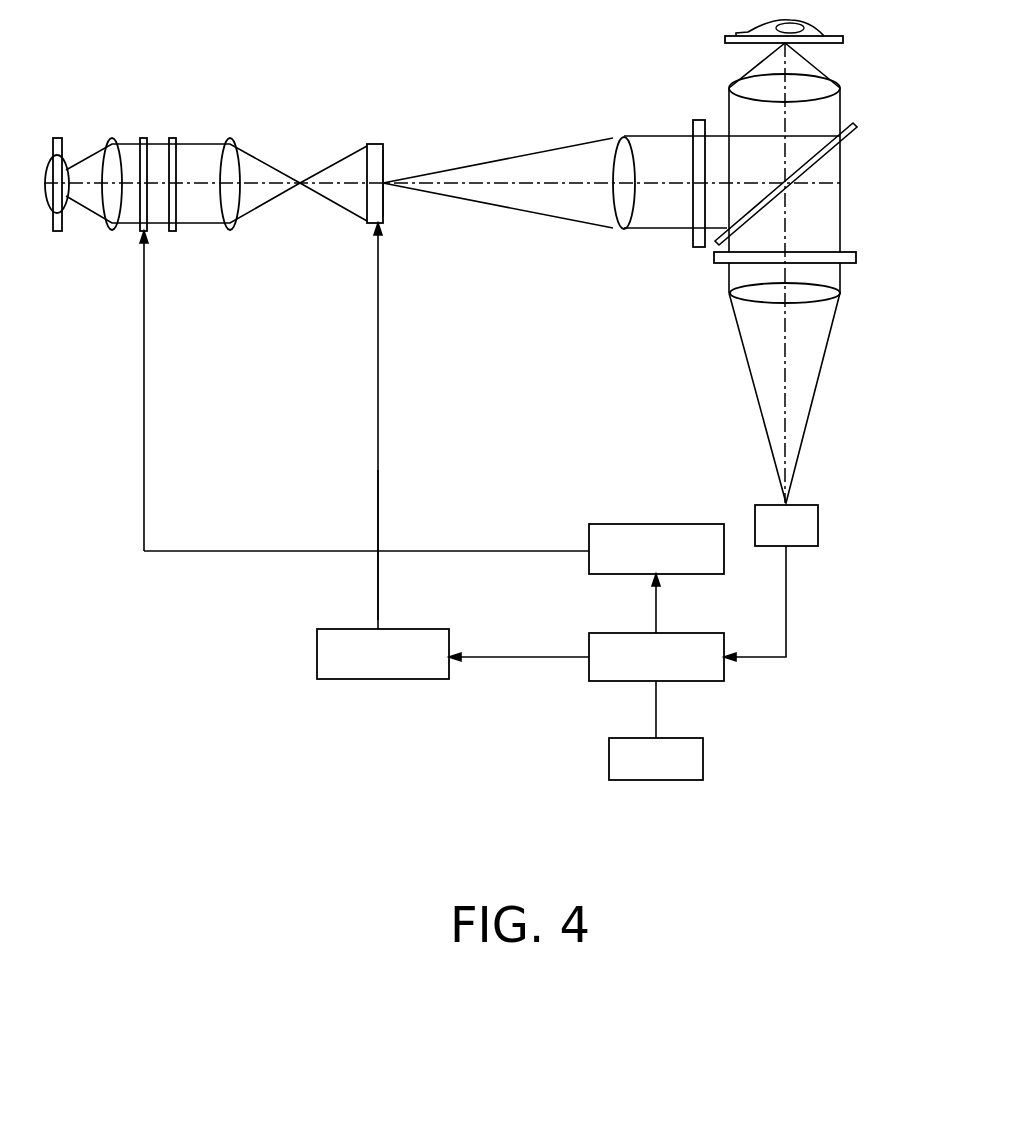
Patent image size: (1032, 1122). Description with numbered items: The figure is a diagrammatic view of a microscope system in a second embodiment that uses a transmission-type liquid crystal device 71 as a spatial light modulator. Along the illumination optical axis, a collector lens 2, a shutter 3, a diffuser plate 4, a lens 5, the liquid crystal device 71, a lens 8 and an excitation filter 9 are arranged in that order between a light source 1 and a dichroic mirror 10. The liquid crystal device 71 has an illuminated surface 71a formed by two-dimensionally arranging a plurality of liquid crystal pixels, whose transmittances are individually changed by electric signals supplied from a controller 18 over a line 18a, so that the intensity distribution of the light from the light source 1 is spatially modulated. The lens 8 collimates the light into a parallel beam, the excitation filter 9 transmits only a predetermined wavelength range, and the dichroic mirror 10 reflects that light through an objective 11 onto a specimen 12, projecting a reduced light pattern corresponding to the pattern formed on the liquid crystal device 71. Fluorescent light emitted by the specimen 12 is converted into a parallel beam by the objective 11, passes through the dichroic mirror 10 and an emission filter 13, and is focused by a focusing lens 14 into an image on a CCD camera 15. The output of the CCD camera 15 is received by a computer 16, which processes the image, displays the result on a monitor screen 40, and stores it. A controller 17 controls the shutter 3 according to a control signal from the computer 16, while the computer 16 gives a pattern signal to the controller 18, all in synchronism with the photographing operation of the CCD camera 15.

The light source 1 is at (56, 137).
The collector lens 2 is at (110, 137).
The shutter 3 is at (145, 137).
The diffuser plate 4 is at (175, 137).
The lens 5 is at (231, 137).
The transmission-type liquid crystal device 71 is at (376, 143).
The illuminated surface 71a is at (385, 212).
The lens 8 is at (622, 137).
The excitation filter 9 is at (696, 120).
The dichroic mirror 10 is at (856, 124).
The objective 11 is at (840, 86).
The specimen 12 is at (843, 40).
The emission filter 13 is at (856, 257).
The focusing lens 14 is at (840, 293).
The CCD camera 15 is at (818, 527).
The computer 16 is at (600, 681).
The controller 17 is at (672, 523).
The controller 18 is at (350, 680).
The signal line 18a is at (377, 464).
The monitor screen 40 is at (703, 760).